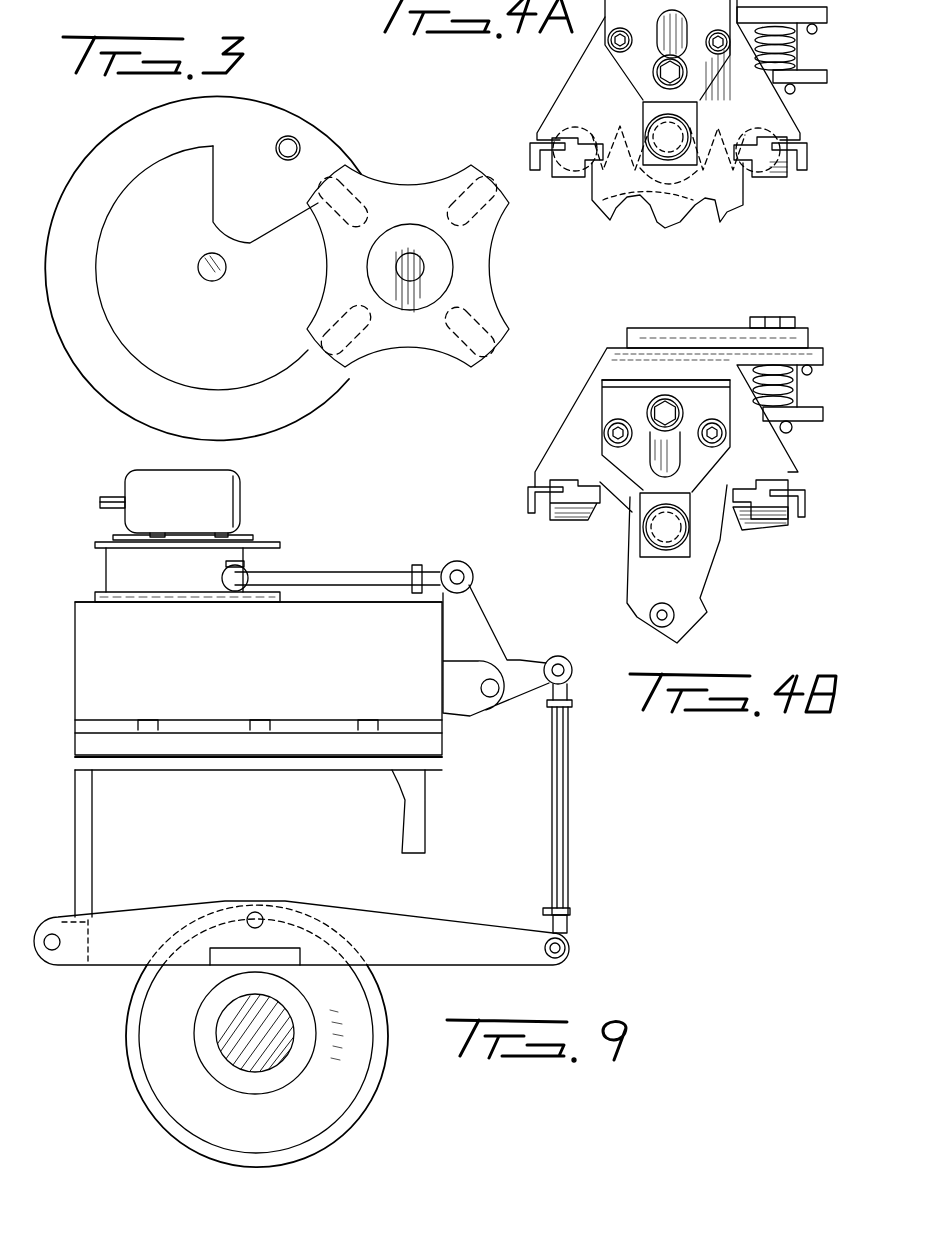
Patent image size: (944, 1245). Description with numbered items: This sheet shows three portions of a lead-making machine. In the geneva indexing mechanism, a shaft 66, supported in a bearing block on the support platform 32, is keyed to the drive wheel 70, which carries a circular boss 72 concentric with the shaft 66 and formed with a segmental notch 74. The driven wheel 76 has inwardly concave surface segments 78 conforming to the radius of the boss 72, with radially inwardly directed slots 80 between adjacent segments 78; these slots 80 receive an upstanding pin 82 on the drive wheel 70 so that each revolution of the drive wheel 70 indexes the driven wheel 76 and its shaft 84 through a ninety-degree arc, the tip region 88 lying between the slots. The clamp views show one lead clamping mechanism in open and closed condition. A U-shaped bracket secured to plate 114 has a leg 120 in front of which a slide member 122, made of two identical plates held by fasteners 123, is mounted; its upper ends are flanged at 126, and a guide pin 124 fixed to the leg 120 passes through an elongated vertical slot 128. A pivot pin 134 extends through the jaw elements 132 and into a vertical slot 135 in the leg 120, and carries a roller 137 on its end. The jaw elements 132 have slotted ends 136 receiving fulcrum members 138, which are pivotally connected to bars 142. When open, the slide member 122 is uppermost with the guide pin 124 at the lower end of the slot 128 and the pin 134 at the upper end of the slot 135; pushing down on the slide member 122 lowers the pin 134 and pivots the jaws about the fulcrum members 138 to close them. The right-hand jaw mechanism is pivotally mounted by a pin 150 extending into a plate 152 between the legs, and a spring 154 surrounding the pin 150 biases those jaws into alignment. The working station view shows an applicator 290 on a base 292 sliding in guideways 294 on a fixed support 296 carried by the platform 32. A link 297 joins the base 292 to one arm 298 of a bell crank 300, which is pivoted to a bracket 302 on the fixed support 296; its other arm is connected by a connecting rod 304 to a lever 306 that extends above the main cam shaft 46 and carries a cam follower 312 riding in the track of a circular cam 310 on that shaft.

In FIG. 9, the support platform 32 is at (255, 768).
In FIG. 9, the main cam shaft 46 is at (230, 1050).
In FIG. 3, the shaft 66 is at (226, 280).
In FIG. 3, the drive wheel 70 is at (368, 161).
In FIG. 3, the circular boss 72 is at (213, 353).
In FIG. 3, the segmental notch 74 is at (217, 188).
In FIG. 3, the driven wheel 76 is at (467, 290).
In FIG. 3, the inwardly concave surface segments 78 is at (401, 186).
In FIG. 3, the radially inwardly directed slots 80 is at (347, 230).
In FIG. 3, the upstanding pin 82 is at (296, 139).
In FIG. 3, the shaft 84 is at (412, 266).
In FIG. 3, the tip 88 is at (403, 353).
In FIG. 4B, the plate 114 is at (697, 336).
In FIG. 4A, the leg 120 is at (570, 107).
In FIG. 4B, the leg 120 is at (560, 449).
In FIG. 4A, the slide member 122 is at (620, 60).
In FIG. 4B, the slide member 122 is at (620, 403).
In FIG. 4A, the fasteners 123 is at (610, 38).
In FIG. 4A, the guide pin 124 is at (657, 79).
In FIG. 4B, the guide pin 124 is at (667, 413).
In FIG. 4B, the flanged upper ends 126 is at (630, 382).
In FIG. 4B, the elongated vertical slot 128 is at (681, 470).
In FIG. 4A, the jaw elements 132 is at (657, 227).
In FIG. 4B, the jaw elements 132 is at (693, 626).
In FIG. 4A, the pivot pin 134 is at (684, 138).
In FIG. 4B, the pivot pin 134 is at (680, 545).
In FIG. 4A, the vertical slot 135 is at (688, 203).
In FIG. 4B, the vertical slot 135 is at (667, 466).
In FIG. 4B, the ends 136 is at (727, 517).
In FIG. 4B, the roller 137 is at (643, 548).
In FIG. 4A, the fulcrum members 138 is at (577, 173).
In FIG. 4B, the fulcrum members 138 is at (587, 510).
In FIG. 4A, the bars 142 is at (531, 151).
In FIG. 4B, the bars 142 is at (528, 496).
In FIG. 4A, the pin 150 is at (782, 20).
In FIG. 4B, the pin 150 is at (795, 322).
In FIG. 4A, the plate 152 is at (818, 80).
In FIG. 4B, the plate 152 is at (803, 423).
In FIG. 4A, the spring 154 is at (800, 50).
In FIG. 4B, the spring 154 is at (800, 390).
In FIG. 9, the applicator 290 is at (230, 487).
In FIG. 9, the base 292 is at (108, 575).
In FIG. 9, the guideways 294 is at (127, 618).
In FIG. 9, the fixed support 296 is at (263, 684).
In FIG. 9, the link 297 is at (325, 572).
In FIG. 9, the arm 298 is at (480, 620).
In FIG. 9, the bell crank 300 is at (527, 657).
In FIG. 9, the bracket 302 is at (453, 710).
In FIG. 9, the connecting rod 304 is at (560, 818).
In FIG. 9, the lever 306 is at (450, 937).
In FIG. 9, the circular cam 310 is at (360, 1090).
In FIG. 9, the cam follower 312 is at (283, 910).